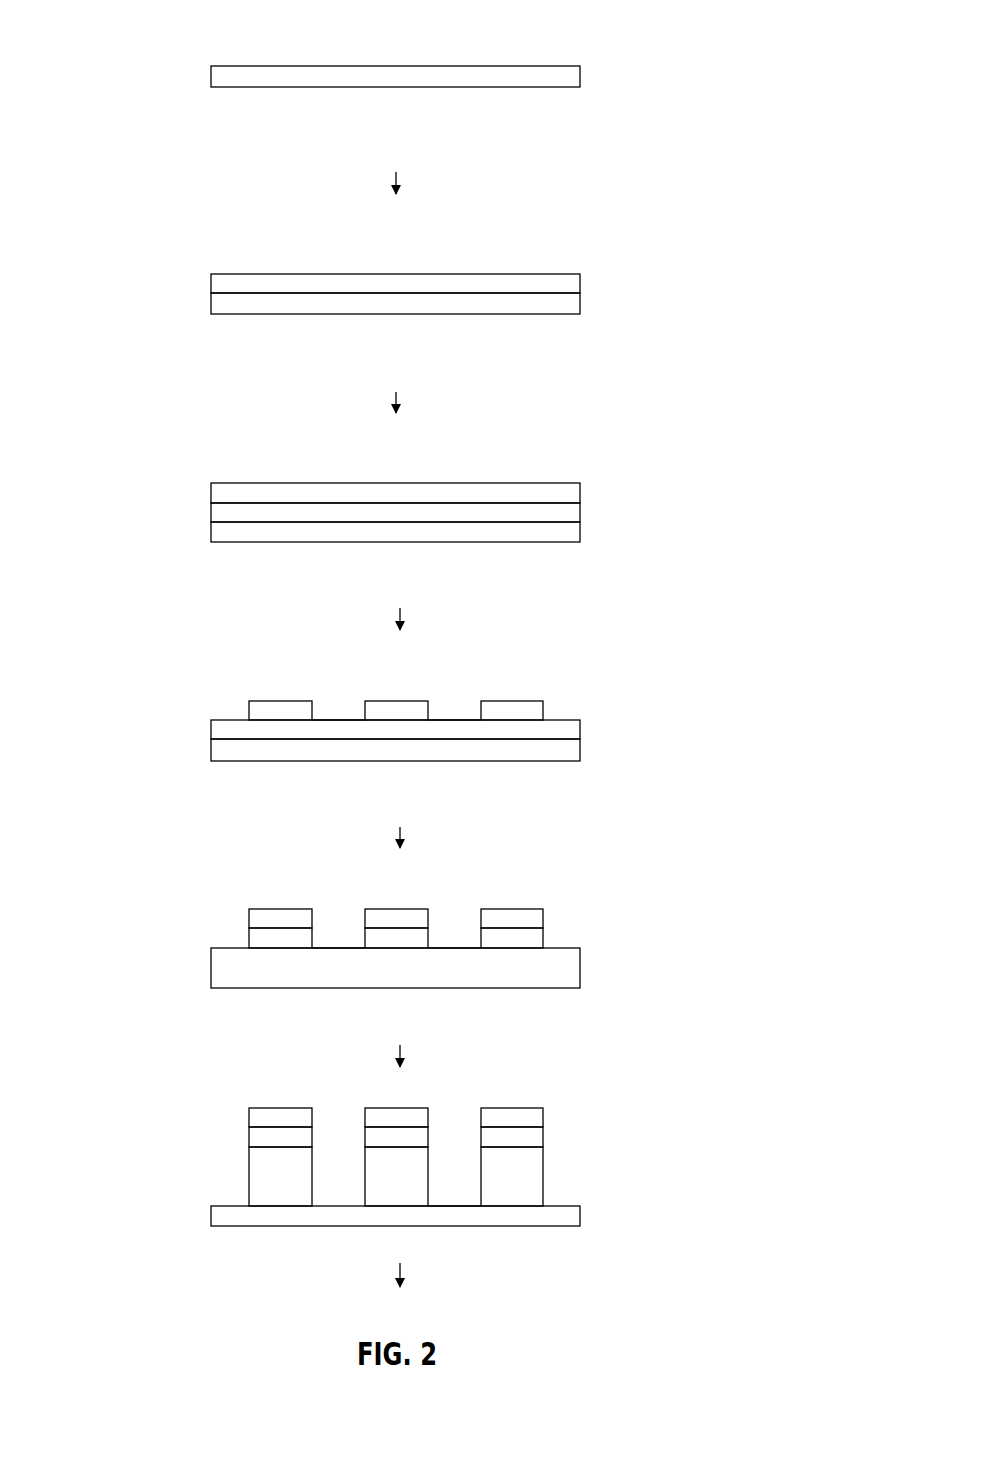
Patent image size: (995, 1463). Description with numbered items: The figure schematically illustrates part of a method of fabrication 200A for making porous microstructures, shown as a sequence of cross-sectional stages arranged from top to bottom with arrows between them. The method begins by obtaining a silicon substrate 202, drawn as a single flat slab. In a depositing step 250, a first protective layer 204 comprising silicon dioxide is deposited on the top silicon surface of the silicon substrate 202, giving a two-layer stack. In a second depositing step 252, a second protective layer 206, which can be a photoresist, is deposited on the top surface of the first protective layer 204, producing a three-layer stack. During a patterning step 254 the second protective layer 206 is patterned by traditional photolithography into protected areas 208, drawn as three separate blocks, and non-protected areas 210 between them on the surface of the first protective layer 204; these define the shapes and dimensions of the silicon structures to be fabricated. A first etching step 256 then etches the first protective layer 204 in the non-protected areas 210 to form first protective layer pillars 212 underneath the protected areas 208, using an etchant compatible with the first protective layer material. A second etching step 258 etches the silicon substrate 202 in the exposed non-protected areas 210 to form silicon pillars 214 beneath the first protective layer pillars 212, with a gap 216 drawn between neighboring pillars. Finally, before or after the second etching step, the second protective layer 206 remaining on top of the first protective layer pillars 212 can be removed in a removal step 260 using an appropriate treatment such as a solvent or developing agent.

The method of fabrication 200A is at (135, 44).
The silicon substrate 202 is at (582, 76).
The first protective layer 204 is at (582, 284).
The second protective layer 206 is at (582, 493).
The protected areas 208 is at (511, 700).
The non-protected areas 210 is at (332, 705).
The first protective layer pillars 212 is at (544, 938).
The silicon pillars 214 is at (600, 1147).
The trench between pillars 216 is at (436, 1205).
The depositing step 250 is at (492, 200).
The second depositing step 252 is at (492, 422).
The patterning step 254 is at (492, 626).
The first etching step 256 is at (492, 836).
The second etching step 258 is at (492, 1058).
The removal step 260 is at (492, 1290).